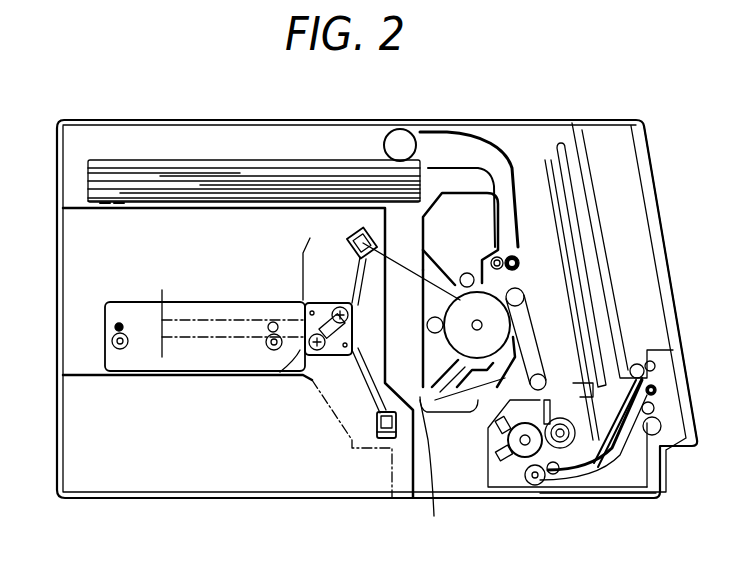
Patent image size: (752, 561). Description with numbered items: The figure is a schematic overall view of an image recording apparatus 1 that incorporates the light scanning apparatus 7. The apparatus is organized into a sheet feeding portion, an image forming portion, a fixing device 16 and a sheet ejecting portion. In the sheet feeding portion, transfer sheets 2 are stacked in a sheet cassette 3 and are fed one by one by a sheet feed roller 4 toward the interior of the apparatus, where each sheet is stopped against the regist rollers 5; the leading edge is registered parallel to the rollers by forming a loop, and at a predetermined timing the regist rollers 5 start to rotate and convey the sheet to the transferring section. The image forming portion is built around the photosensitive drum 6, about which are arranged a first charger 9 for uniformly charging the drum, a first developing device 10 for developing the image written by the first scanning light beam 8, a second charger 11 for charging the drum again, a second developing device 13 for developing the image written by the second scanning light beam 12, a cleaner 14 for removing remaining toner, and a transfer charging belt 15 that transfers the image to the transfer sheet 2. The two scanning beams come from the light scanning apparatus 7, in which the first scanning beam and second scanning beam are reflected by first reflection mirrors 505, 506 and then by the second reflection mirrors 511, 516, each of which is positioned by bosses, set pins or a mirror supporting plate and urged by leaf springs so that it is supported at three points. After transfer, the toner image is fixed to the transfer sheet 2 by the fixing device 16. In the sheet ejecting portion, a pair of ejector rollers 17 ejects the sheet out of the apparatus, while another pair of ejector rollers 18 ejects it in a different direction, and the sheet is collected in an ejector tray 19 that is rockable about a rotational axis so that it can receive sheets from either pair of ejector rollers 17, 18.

The image recording apparatus 1 is at (92, 120).
The transfer sheet 2 is at (130, 160).
The sheet cassette 3 is at (185, 160).
The sheet feed roller 4 is at (408, 128).
The regist rollers 5 is at (513, 248).
The photosensitive drum 6 is at (530, 275).
The light scanning apparatus 7 is at (105, 308).
The first scanning light beam 8 is at (203, 338).
The first charger 9 is at (428, 470).
The first developing device 10 is at (385, 420).
The second charger 11 is at (455, 290).
The second scanning light beam 12 is at (195, 318).
The second developing device 13 is at (424, 226).
The cleaner 14 is at (471, 440).
The transfer charging belt 15 is at (518, 320).
The fixing device 16 is at (509, 489).
The ejector rollers 17 is at (656, 364).
The ejector rollers 18 is at (660, 420).
The ejector tray 19 is at (650, 158).
The first reflection mirror 505 is at (362, 395).
The first reflection mirror 506 is at (296, 376).
The second reflection mirror 511 is at (347, 233).
The second reflection mirror 516 is at (376, 446).